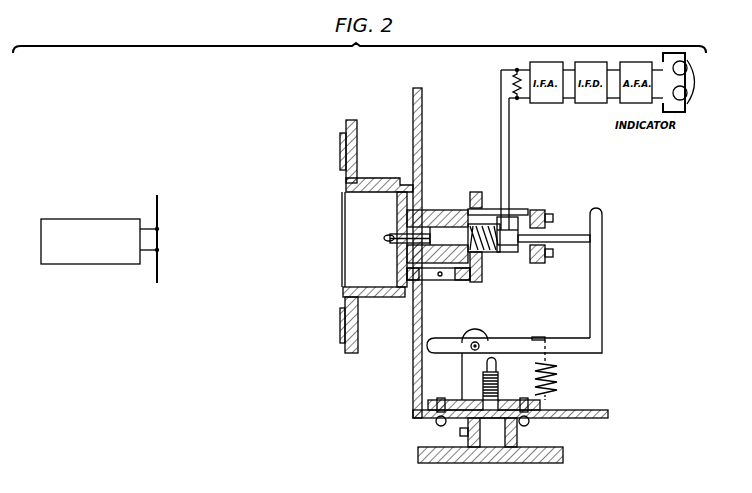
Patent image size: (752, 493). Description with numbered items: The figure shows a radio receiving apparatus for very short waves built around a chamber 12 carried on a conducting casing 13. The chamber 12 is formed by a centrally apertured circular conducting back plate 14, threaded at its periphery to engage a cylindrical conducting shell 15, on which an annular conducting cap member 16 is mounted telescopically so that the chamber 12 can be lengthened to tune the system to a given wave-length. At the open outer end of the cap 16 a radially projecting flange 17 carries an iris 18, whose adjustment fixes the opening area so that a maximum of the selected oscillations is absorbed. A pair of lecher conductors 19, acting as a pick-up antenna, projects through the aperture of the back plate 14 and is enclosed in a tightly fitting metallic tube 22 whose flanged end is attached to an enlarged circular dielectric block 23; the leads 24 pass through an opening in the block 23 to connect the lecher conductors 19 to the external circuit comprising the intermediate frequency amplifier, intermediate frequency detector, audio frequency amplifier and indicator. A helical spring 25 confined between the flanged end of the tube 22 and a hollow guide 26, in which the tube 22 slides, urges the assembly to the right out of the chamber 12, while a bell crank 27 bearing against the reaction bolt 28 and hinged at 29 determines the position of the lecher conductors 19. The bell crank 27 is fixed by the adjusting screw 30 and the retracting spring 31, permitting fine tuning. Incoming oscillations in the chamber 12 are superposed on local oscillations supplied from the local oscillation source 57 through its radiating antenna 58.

The chamber 12 is at (365, 200).
The conducting casing 13 is at (422, 142).
The conducting back plate 14 is at (397, 207).
The cylindrical conducting shell 15 is at (385, 290).
The annular conducting cap member 16 is at (379, 173).
The radially projecting flange 17 is at (357, 143).
The iris 18 is at (340, 143).
The lecher conductors 19 is at (384, 238).
The metallic tube 22 is at (493, 262).
The dielectric block 23 is at (510, 253).
The leads 24 is at (510, 141).
The helical spring 25 is at (491, 268).
The hollow guide 26 is at (455, 211).
The bell crank 27 is at (590, 292).
The reaction bolt 28 is at (565, 245).
The hinge 29 is at (486, 336).
The adjusting screw 30 is at (486, 368).
The retracting spring 31 is at (556, 368).
The local oscillation source 57 is at (63, 218).
The radiating antenna 58 is at (157, 206).